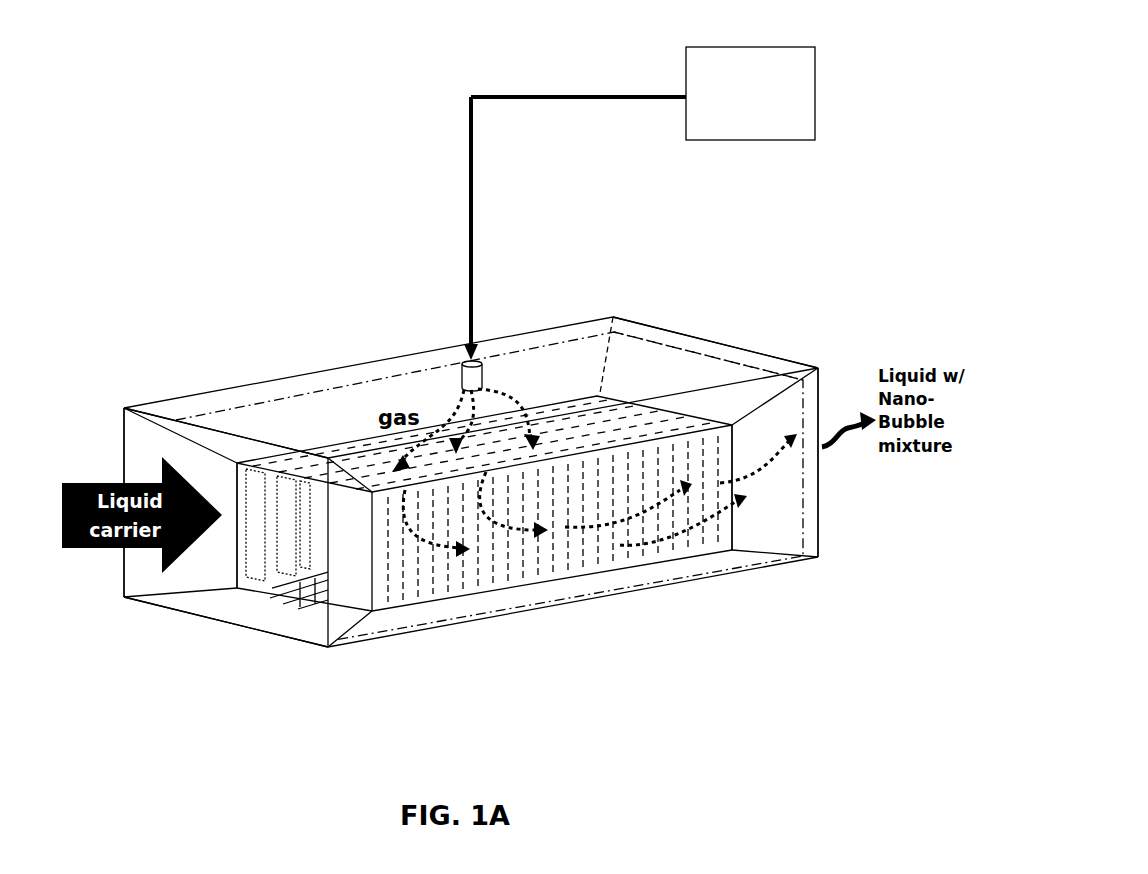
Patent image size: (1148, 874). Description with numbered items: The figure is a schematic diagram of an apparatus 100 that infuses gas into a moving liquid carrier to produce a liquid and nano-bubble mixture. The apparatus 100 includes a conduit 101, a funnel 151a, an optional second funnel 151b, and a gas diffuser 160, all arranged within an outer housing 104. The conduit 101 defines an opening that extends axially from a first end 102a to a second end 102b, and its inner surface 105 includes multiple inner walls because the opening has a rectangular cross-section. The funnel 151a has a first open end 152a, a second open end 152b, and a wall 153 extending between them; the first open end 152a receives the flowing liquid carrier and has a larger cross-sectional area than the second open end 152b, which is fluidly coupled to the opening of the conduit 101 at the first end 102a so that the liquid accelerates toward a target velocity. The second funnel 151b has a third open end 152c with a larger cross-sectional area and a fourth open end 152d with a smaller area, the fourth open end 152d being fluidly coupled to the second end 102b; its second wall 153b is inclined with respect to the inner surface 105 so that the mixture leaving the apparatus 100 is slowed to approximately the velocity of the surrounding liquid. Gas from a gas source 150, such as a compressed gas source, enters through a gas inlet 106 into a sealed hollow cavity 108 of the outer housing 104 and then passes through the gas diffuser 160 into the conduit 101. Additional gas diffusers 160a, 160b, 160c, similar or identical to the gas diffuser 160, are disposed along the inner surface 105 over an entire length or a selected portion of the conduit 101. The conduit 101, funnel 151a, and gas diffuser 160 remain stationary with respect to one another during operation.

The apparatus 100 is at (282, 225).
The conduit 101 is at (566, 390).
The first end 102a is at (372, 608).
The second end 102b is at (737, 540).
The outer housing 104 is at (576, 312).
The inner surface 105 is at (270, 476).
The gas inlet 106 is at (460, 348).
The sealed hollow cavity 108 is at (258, 398).
The gas source 150 is at (770, 108).
The funnel 151a is at (272, 634).
The second funnel 151b is at (796, 385).
The first open end 152a is at (124, 557).
The second open end 152b is at (237, 468).
The third open end 152c is at (817, 483).
The fourth open end 152d is at (737, 521).
The wall 153 is at (145, 435).
The second wall 153b is at (668, 366).
The gas diffuser 160 is at (288, 566).
The gas diffuser 160a is at (422, 588).
The gas diffuser 160b is at (512, 568).
The gas diffuser 160c is at (600, 556).